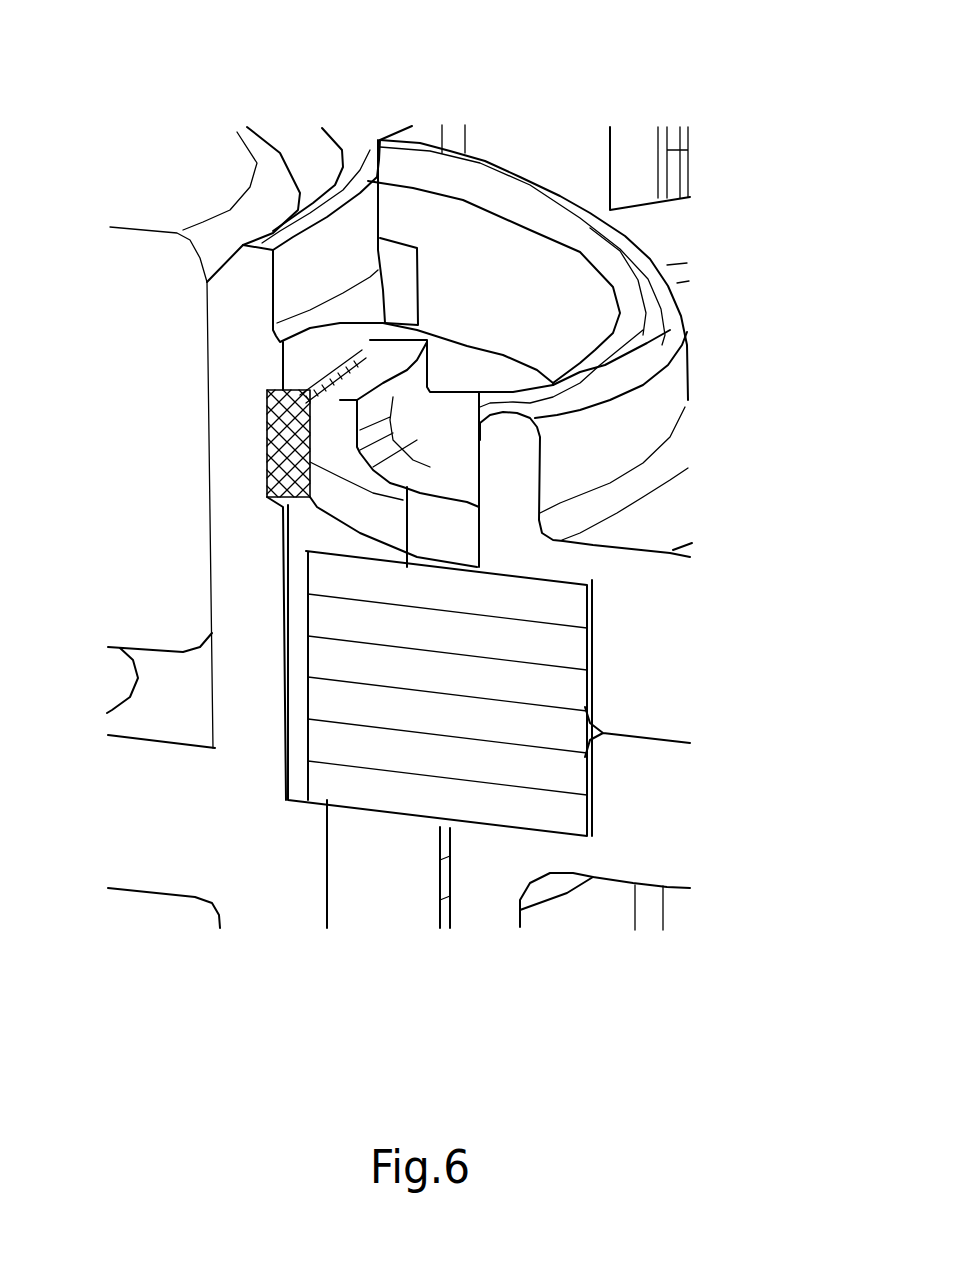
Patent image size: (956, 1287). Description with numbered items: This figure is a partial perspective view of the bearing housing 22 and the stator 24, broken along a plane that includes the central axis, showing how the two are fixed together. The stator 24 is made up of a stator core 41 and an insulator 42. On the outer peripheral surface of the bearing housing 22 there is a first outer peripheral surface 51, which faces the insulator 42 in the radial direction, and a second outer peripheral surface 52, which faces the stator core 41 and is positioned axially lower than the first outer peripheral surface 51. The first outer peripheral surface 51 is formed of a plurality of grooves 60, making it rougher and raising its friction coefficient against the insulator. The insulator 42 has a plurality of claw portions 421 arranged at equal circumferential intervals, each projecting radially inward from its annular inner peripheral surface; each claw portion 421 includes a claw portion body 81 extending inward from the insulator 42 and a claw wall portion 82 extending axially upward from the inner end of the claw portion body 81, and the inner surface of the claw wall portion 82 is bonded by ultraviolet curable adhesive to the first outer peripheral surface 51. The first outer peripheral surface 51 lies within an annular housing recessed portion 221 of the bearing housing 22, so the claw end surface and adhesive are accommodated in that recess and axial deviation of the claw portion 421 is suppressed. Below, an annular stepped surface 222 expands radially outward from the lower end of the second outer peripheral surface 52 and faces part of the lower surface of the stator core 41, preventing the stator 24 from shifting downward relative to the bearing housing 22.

The bearing housing 22 is at (365, 228).
The housing recessed portion 221 is at (352, 343).
The stepped surface 222 is at (287, 788).
The stator 24 is at (598, 959).
The stator core 41 is at (507, 757).
The insulator 42 is at (665, 527).
The claw portion 421 is at (827, 197).
The first outer peripheral surface 51 is at (397, 415).
The second outer peripheral surface 52 is at (300, 690).
The groove 60 is at (390, 368).
The claw portion body 81 is at (450, 477).
The claw wall portion 82 is at (380, 340).